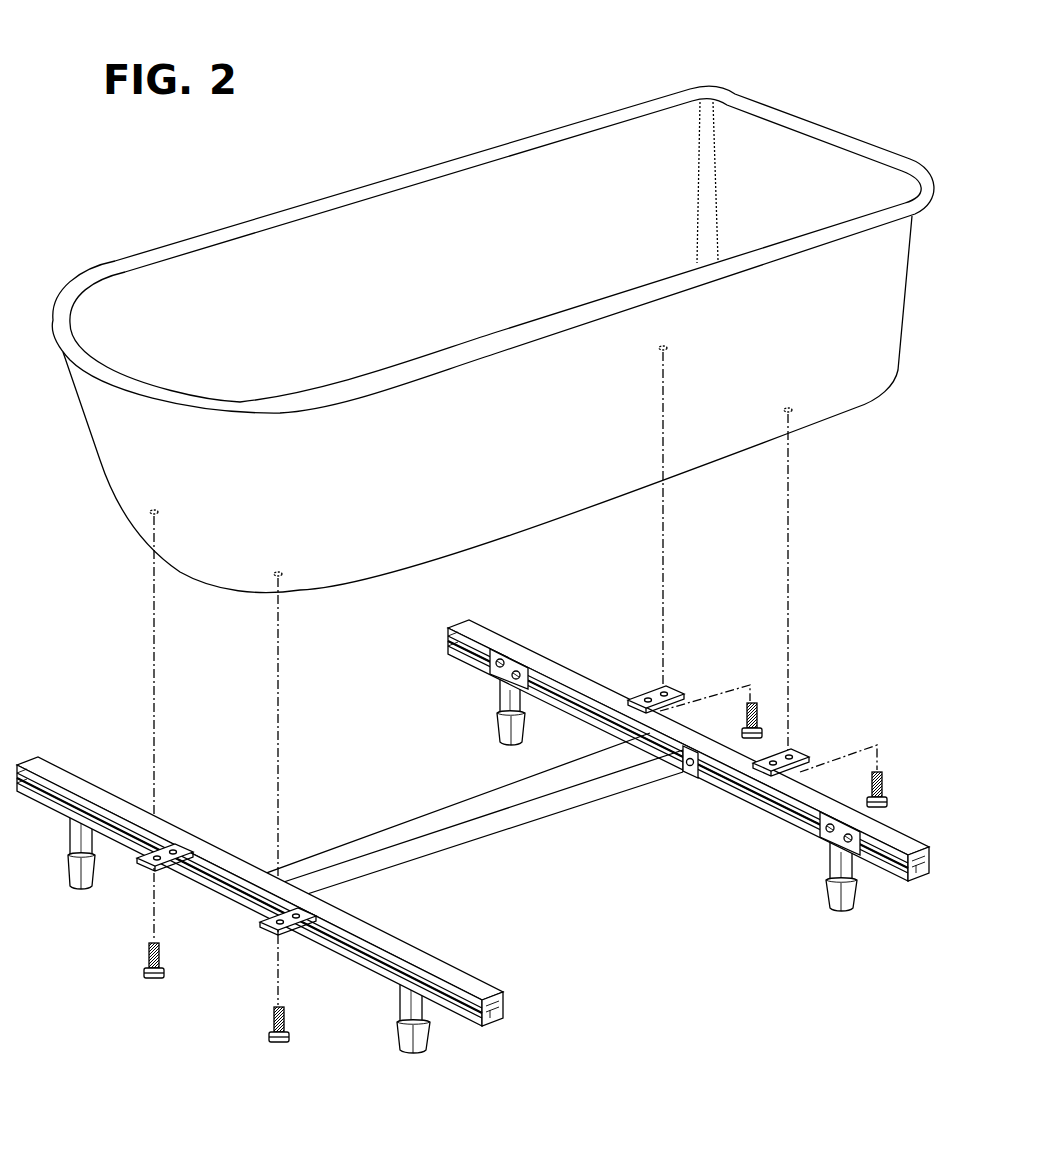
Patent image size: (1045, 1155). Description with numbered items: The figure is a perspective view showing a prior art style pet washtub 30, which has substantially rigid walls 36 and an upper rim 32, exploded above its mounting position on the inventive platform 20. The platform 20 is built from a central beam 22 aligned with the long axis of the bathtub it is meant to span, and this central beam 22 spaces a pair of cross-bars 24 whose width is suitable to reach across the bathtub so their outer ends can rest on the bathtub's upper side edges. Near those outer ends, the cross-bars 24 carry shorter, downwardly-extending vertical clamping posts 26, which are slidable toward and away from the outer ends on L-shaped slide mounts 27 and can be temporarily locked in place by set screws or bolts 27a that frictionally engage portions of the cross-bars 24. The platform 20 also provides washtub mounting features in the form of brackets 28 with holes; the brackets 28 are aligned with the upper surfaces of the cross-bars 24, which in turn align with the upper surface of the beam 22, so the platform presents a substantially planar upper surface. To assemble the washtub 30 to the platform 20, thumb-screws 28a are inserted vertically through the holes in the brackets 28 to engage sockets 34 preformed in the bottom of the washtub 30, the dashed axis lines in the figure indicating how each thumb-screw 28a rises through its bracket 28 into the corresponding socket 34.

The platform 20 is at (473, 732).
The central beam 22 is at (517, 813).
The cross-bars 24 is at (473, 818).
The vertical clamping posts 26 is at (77, 835).
The L-shaped slide mounts 27 is at (491, 648).
The set screws or bolts 27a is at (520, 660).
The brackets 28 is at (143, 868).
The thumb-screws 28a is at (158, 980).
The pet washtub 30 is at (620, 92).
The tub rim 32 is at (425, 227).
The sockets 34 is at (795, 410).
The rigid walls 36 is at (793, 143).